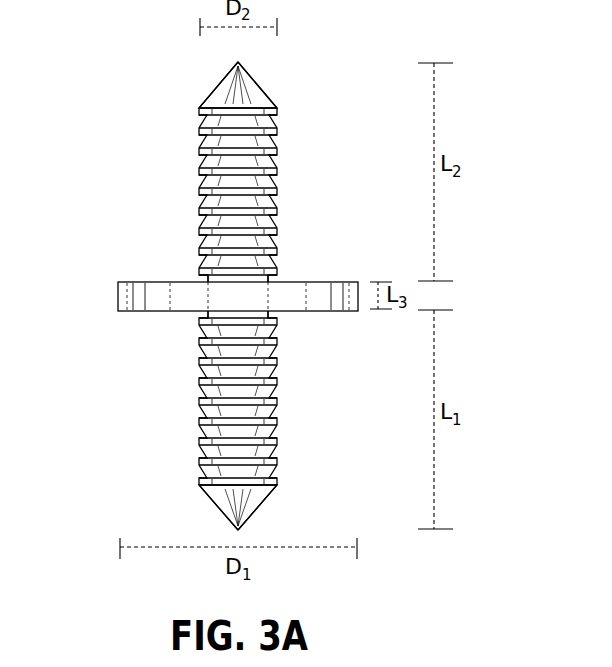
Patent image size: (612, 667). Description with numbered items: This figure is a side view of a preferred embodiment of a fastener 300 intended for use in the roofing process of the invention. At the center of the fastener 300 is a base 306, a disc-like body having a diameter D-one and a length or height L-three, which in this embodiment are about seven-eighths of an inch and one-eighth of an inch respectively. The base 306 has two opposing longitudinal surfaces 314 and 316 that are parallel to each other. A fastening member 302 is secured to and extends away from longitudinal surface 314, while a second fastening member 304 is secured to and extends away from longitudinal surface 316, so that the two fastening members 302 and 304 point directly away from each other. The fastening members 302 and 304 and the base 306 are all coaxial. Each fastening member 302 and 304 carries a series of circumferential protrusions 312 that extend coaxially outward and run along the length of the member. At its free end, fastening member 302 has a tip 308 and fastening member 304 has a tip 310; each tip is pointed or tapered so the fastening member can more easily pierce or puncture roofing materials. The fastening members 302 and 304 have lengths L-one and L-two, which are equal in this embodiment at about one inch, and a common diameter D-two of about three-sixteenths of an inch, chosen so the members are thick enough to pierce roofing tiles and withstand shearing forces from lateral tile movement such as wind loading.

The fastener 300 is at (312, 72).
The fastening member 302 is at (290, 378).
The fastening member 304 is at (283, 148).
The base 306 is at (352, 282).
The tip 308 is at (217, 509).
The tip 310 is at (216, 93).
The circumferential protrusions 312 is at (199, 243).
The longitudinal surface 314 is at (148, 313).
The longitudinal surface 316 is at (297, 270).